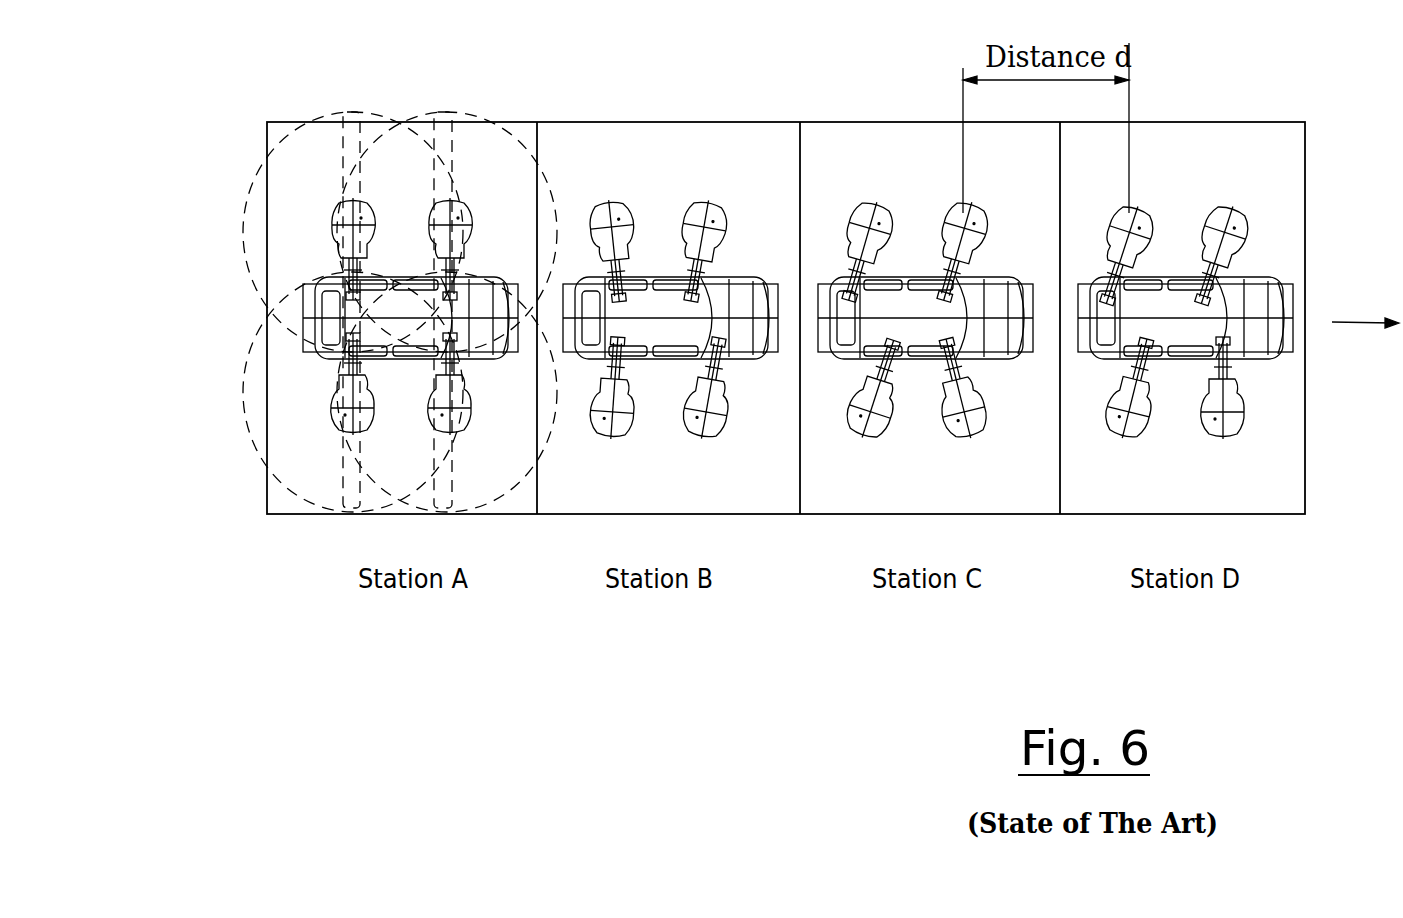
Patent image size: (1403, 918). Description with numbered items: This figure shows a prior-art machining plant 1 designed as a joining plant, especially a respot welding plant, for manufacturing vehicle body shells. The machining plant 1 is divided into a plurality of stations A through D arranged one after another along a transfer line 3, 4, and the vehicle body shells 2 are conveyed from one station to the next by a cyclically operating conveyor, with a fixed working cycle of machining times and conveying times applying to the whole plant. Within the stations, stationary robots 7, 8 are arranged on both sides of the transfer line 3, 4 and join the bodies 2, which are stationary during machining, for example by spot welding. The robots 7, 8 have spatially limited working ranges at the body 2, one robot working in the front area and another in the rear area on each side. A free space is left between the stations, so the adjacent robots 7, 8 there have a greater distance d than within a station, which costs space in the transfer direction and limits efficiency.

The machining plant 1 is at (337, 553).
The vehicle body shell 2 is at (733, 293).
The transfer line 3 is at (1365, 279).
The conveying direction 4 is at (1363, 320).
The robot 7 is at (627, 423).
The robot 8 is at (703, 218).